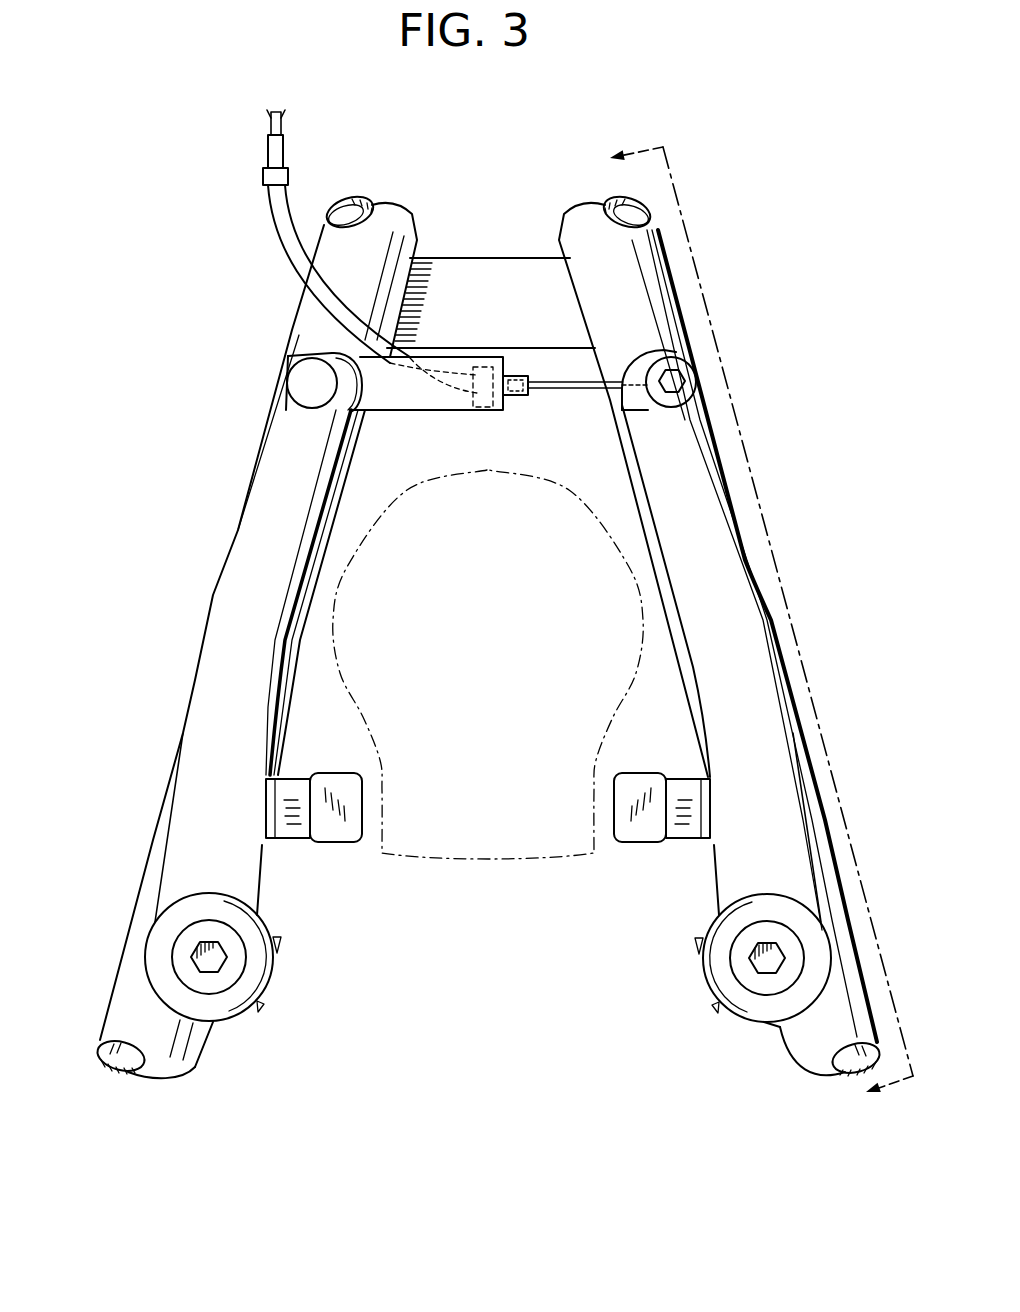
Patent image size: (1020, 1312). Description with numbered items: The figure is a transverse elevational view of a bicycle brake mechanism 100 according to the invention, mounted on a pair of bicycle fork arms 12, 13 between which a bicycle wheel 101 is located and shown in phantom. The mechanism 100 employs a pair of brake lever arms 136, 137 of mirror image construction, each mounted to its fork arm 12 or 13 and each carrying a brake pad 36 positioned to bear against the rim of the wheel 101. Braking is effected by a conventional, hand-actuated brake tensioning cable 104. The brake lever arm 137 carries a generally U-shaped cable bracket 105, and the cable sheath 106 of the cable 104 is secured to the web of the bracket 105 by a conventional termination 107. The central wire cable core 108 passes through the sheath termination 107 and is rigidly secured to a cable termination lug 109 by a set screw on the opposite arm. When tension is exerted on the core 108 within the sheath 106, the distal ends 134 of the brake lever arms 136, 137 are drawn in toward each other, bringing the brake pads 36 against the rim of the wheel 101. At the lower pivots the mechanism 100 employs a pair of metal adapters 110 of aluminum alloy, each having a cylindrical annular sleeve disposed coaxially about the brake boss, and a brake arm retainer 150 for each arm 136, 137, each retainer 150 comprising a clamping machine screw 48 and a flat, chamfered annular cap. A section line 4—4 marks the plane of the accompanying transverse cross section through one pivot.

The section line 4- 4 is at (757, 626).
The bicycle fork arm 12 is at (842, 1000).
The bicycle fork arm 13 is at (122, 990).
The brake pad 36 is at (330, 830).
The clamping machine screw 48 is at (232, 963).
The bicycle brake mechanism 100 is at (166, 615).
The bicycle wheel 101 is at (487, 868).
The brake tensioning cable 104 is at (281, 253).
The U-shaped cable bracket 105 is at (397, 402).
The cable sheath 106 is at (268, 203).
The sheath termination 107 is at (512, 398).
The central wire cable core 108 is at (282, 122).
The cable termination lug 109 is at (695, 366).
The adapter 110 is at (249, 1035).
The distal ends of the brake lever arms 134 is at (297, 436).
The brake lever arm 136 is at (774, 694).
The brake lever arm 137 is at (240, 584).
The brake arm retainer 150 is at (176, 908).